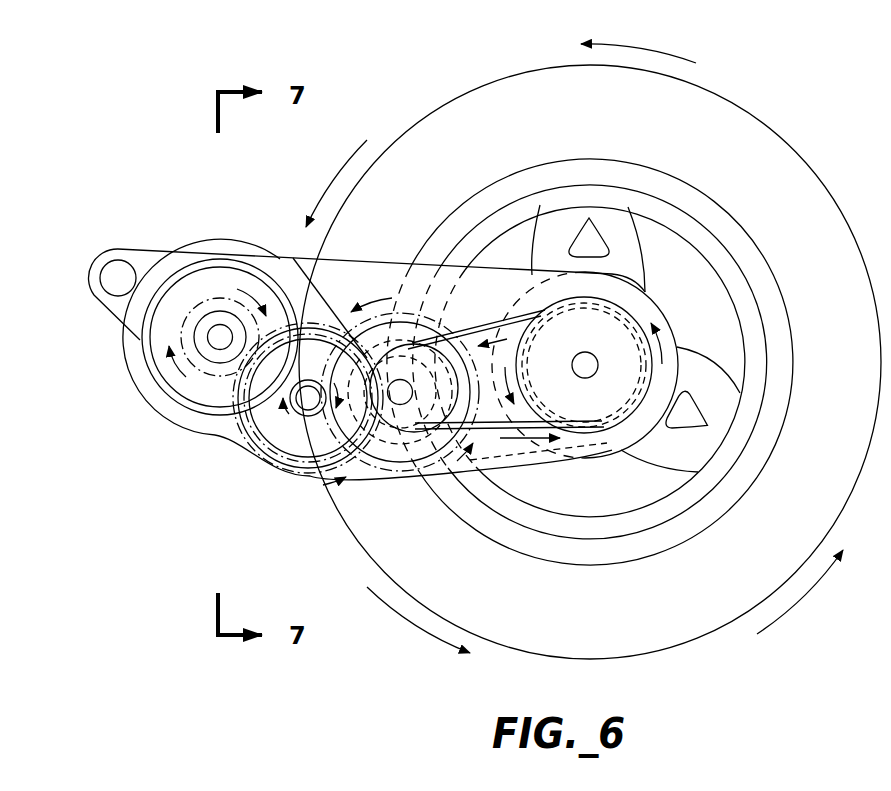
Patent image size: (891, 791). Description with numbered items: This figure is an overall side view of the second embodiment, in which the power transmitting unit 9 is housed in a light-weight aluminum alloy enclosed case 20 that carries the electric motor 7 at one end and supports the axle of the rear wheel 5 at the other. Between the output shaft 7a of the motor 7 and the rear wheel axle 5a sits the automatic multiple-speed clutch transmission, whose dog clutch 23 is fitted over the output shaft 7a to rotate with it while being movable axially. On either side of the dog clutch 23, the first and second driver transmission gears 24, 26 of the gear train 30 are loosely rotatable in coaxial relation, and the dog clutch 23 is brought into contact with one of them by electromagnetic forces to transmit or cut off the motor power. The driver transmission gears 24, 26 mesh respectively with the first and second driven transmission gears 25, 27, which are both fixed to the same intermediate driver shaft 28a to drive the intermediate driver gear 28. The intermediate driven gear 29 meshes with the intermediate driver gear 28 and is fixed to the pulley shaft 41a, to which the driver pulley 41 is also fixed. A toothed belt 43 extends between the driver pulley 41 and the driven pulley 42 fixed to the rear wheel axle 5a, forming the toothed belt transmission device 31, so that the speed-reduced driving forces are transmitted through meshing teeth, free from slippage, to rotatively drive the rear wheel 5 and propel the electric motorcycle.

The rear wheel 5 is at (723, 115).
The rear wheel axle 5a is at (584, 378).
The electric motor 7 is at (211, 247).
The motor output shaft 7a is at (221, 345).
The power transmitting unit 9 is at (195, 165).
The enclosed case 20 is at (293, 258).
The dog clutch 23 is at (143, 380).
The first driver transmission gear 24 is at (205, 390).
The second driver transmission gear 26 is at (146, 450).
The first driven transmission gear 25 is at (253, 463).
The second driven transmission gear 27 is at (166, 530).
The intermediate driver gear 28 is at (308, 400).
The intermediate driver shaft 28a is at (308, 400).
The intermediate driven gear 29 is at (413, 482).
The gear train 30 is at (362, 505).
The toothed belt transmission device 31 is at (480, 318).
The driver pulley 41 is at (394, 360).
The pulley shaft 41a is at (402, 402).
The driven pulley 42 is at (600, 336).
The toothed belt 43 is at (504, 317).